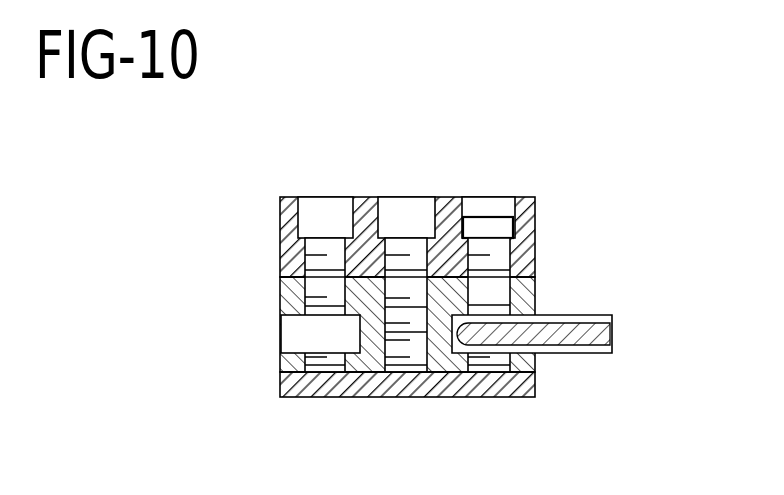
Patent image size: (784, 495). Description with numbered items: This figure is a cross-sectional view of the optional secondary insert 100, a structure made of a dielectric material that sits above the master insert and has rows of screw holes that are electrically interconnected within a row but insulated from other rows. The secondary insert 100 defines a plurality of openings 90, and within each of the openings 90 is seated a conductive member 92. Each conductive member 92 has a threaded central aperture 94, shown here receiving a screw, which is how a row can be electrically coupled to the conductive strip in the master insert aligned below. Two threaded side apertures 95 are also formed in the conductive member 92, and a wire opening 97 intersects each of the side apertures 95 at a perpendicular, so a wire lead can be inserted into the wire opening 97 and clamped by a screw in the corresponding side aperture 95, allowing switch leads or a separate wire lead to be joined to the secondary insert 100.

The secondary insert 100 is at (412, 267).
The conductive member 92 is at (535, 287).
The wire opening 97 is at (522, 317).
The threaded side apertures 95 is at (287, 292).
The openings 90 is at (287, 388).
The threaded central aperture 94 is at (387, 353).